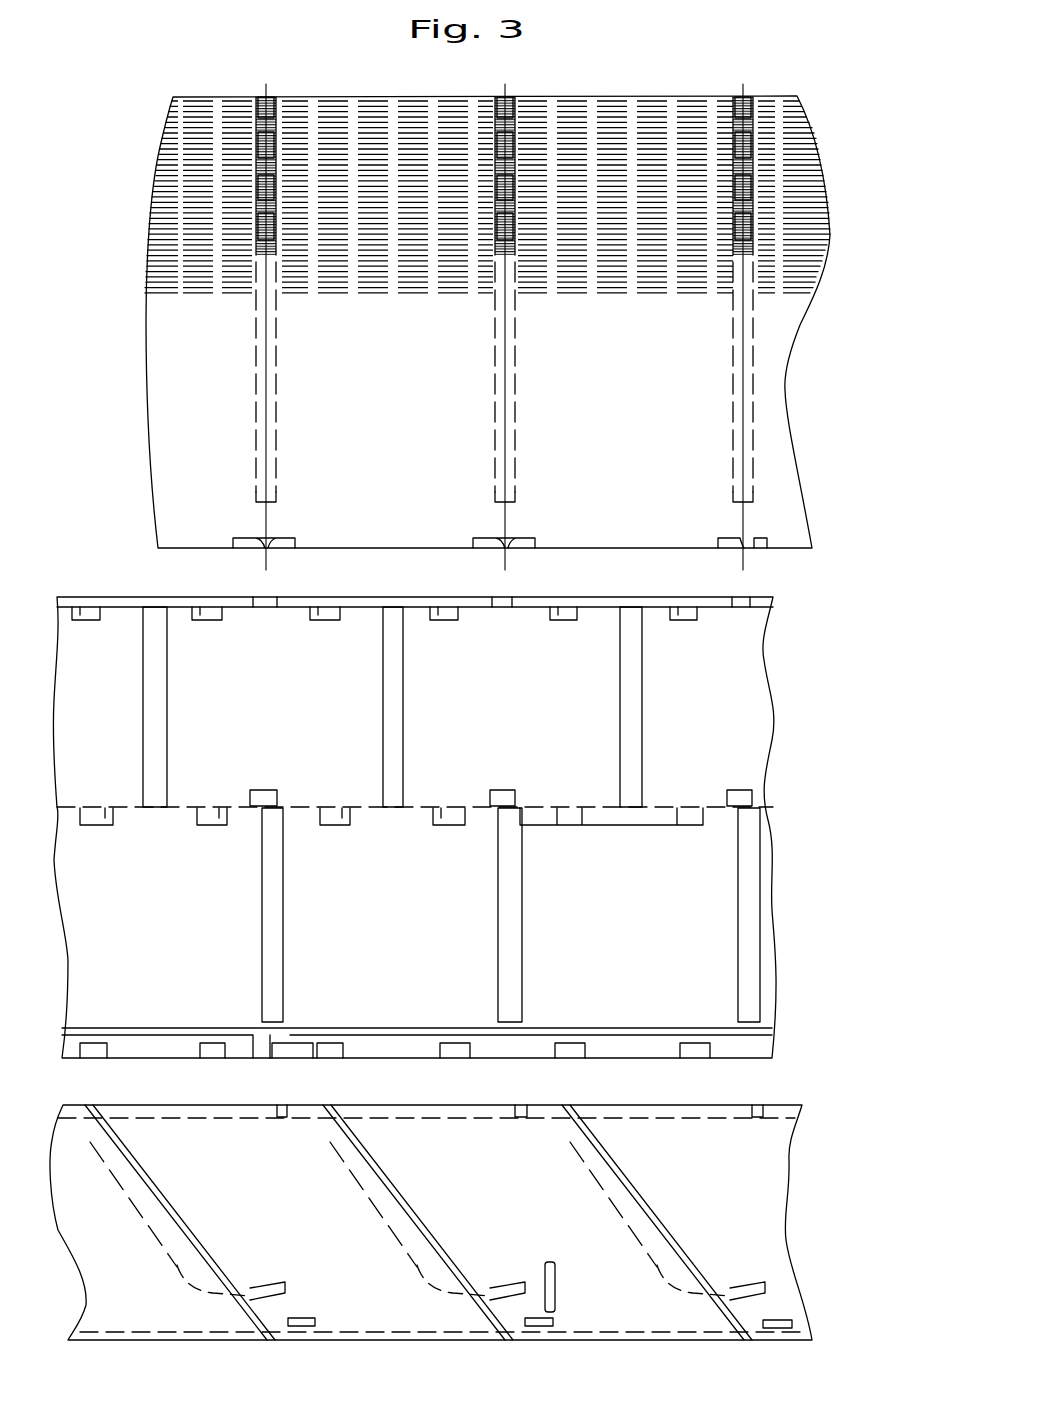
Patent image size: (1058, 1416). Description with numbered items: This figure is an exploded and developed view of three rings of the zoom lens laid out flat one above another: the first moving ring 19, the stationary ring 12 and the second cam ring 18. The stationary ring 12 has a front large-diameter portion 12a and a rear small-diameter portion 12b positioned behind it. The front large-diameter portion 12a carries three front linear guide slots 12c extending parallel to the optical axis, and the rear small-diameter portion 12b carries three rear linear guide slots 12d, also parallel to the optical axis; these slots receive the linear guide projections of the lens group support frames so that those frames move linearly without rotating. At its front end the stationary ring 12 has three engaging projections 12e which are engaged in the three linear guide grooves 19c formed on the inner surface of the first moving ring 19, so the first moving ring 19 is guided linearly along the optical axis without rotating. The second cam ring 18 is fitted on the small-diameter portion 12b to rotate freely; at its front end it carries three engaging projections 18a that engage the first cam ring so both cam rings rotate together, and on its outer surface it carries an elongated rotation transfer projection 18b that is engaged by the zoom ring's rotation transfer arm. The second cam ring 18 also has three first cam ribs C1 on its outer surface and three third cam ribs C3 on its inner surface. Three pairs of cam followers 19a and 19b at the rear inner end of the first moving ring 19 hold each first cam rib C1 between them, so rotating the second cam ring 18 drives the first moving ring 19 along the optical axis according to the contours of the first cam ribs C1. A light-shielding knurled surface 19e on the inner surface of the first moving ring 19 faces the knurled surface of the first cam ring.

The first moving ring 19 is at (785, 386).
The cam follower 19a is at (725, 540).
The cam follower 19b is at (756, 538).
The linear guide groove 19c is at (277, 378).
The light-shielding knurled surface 19e is at (647, 118).
The stationary ring 12 is at (776, 751).
The front large-diameter portion 12a is at (755, 678).
The rear small-diameter portion 12b is at (725, 893).
The front linear guide slot 12c is at (393, 750).
The rear linear guide slot 12d is at (281, 935).
The engaging projection 12e is at (257, 604).
The second cam ring 18 is at (744, 1218).
The engaging projection 18a is at (519, 1105).
The rotation transfer projection 18b is at (543, 1277).
The first cam rib C1 is at (640, 1175).
The third cam rib C3 is at (383, 1225).